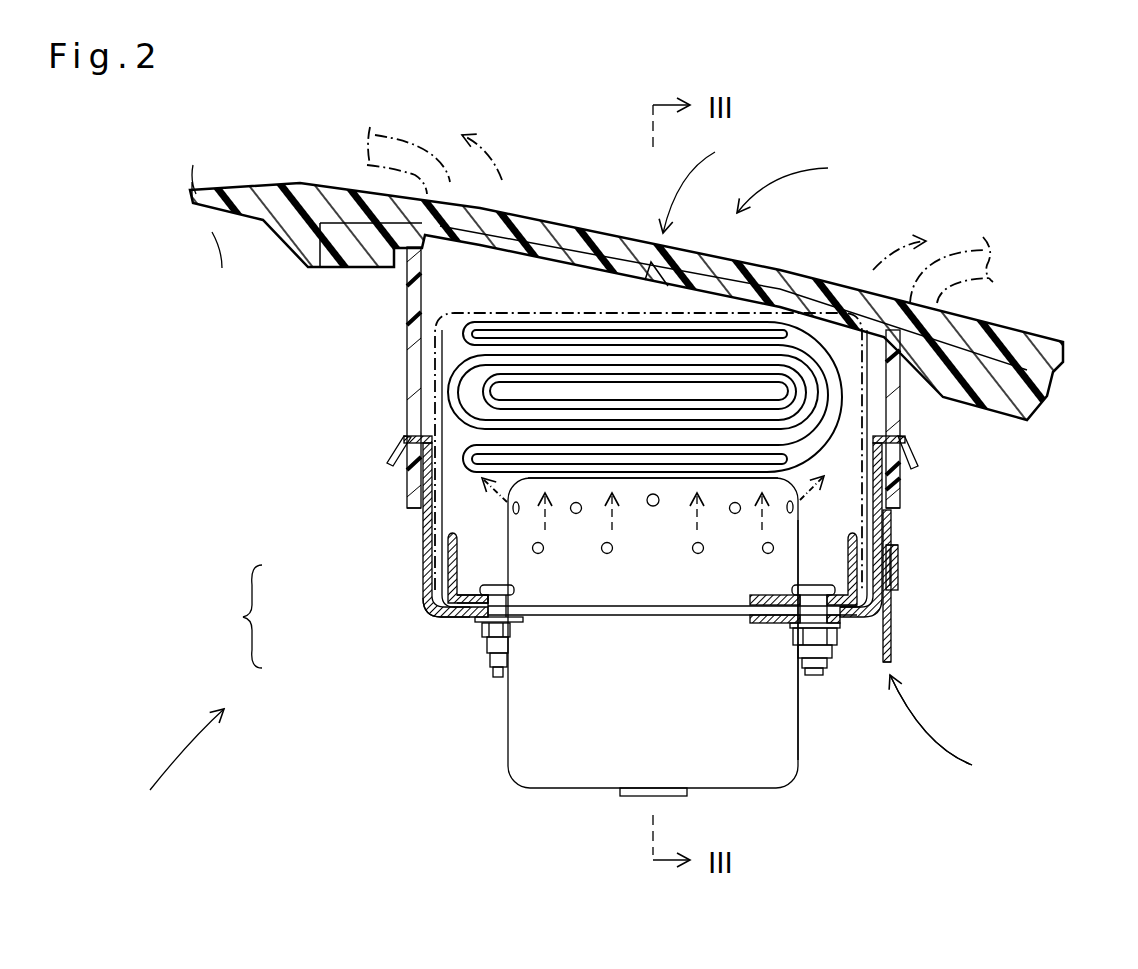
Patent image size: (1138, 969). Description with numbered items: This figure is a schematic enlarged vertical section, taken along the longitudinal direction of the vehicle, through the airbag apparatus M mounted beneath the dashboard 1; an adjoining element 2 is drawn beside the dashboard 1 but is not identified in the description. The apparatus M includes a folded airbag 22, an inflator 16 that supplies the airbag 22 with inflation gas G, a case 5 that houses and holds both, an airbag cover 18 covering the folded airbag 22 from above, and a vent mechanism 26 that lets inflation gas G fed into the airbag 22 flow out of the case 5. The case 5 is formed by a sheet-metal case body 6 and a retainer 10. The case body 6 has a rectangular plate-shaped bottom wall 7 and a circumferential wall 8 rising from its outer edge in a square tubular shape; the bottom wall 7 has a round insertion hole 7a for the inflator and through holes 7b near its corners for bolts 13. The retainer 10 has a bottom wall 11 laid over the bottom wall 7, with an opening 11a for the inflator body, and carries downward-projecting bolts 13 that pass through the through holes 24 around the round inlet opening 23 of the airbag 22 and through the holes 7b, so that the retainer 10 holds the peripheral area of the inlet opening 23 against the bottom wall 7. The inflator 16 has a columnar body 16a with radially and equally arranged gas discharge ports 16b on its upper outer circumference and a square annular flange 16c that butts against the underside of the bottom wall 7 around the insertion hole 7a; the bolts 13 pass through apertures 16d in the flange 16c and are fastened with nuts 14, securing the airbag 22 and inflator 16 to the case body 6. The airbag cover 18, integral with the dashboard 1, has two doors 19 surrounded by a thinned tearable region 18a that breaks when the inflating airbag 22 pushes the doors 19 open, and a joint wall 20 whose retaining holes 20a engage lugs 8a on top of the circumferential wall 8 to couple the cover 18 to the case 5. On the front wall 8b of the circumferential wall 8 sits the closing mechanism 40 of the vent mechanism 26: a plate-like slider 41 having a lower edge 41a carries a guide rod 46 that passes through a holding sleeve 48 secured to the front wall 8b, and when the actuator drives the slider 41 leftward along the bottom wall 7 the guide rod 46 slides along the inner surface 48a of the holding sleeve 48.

The dashboard 1 is at (212, 197).
The roof panel 2 is at (246, 190).
The case 5 is at (244, 616).
The case body 6 is at (423, 600).
The bottom wall 7 is at (848, 622).
The insertion hole 7a is at (540, 624).
The through holes 7b is at (778, 626).
The circumferential wall 8 is at (425, 535).
The lugs 8a is at (392, 455).
The front wall 8b is at (893, 486).
The retainer 10 is at (452, 565).
The bottom wall 11 is at (703, 603).
The opening 11a is at (507, 580).
The bolts 13 is at (497, 670).
The nuts 14 is at (484, 628).
The inflator 16 is at (598, 808).
The body 16a is at (700, 775).
The gas discharge ports 16b is at (606, 555).
The flange 16c is at (642, 628).
The apertures 16d is at (785, 640).
The airbag cover 18 is at (800, 182).
The tearable region 18a is at (706, 180).
The doors 19 is at (417, 153).
The joint wall 20 is at (413, 333).
The retaining holes 20a is at (413, 415).
The airbag 22 is at (583, 330).
The inlet opening 23 is at (525, 602).
The through holes 24 is at (812, 590).
The vent mechanism 26 is at (890, 675).
The closing mechanism 40 is at (968, 731).
The slider 41 is at (891, 630).
The lower edge 41a is at (893, 663).
The guide rod 46 is at (898, 560).
The holding sleeve 48 is at (898, 575).
The inner surface 48a is at (896, 548).
The inflation gas G is at (653, 516).
The airbag apparatus M is at (181, 769).